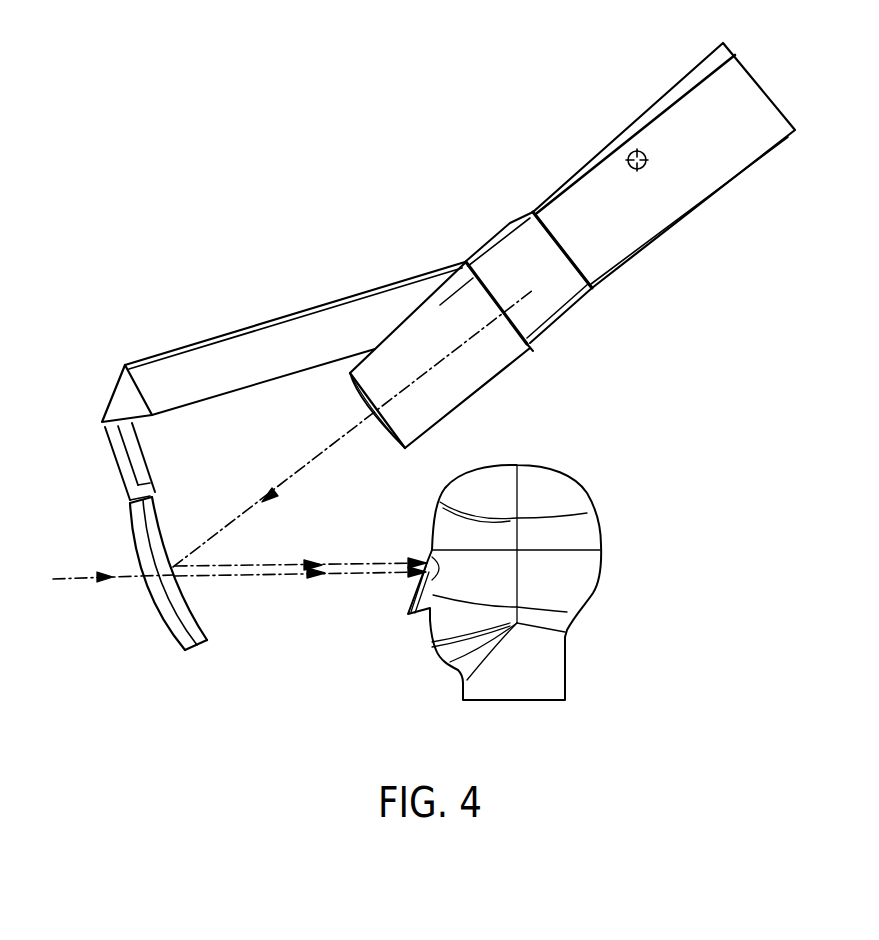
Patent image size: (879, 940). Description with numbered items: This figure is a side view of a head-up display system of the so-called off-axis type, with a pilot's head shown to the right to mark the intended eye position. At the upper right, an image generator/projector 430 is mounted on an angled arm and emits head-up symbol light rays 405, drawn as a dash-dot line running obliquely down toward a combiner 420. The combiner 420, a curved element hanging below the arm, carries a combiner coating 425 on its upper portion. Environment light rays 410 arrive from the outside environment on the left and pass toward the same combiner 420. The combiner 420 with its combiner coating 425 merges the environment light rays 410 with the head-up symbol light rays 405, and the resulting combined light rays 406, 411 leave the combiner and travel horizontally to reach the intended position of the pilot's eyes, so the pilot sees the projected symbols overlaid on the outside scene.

The head-up symbol light rays 405 is at (328, 452).
The combined light rays 406 is at (287, 562).
The environment light rays 410 is at (73, 585).
The combined light rays 411 is at (278, 580).
The combiner 420 is at (137, 543).
The combiner coating 425 is at (158, 508).
The image generator/projector 430 is at (460, 388).